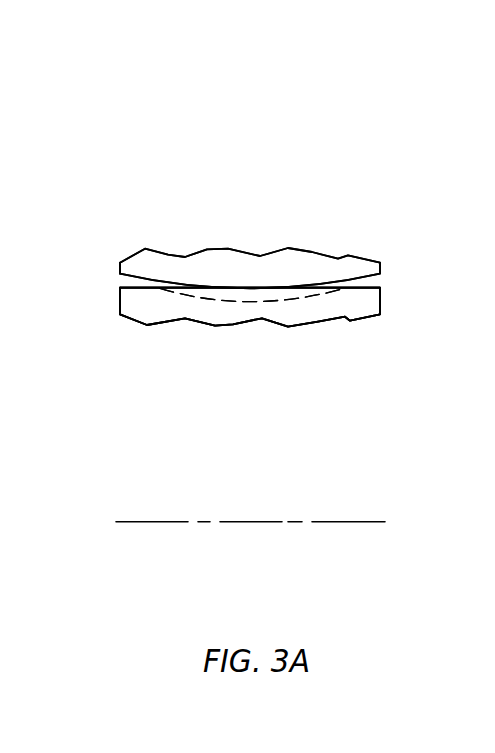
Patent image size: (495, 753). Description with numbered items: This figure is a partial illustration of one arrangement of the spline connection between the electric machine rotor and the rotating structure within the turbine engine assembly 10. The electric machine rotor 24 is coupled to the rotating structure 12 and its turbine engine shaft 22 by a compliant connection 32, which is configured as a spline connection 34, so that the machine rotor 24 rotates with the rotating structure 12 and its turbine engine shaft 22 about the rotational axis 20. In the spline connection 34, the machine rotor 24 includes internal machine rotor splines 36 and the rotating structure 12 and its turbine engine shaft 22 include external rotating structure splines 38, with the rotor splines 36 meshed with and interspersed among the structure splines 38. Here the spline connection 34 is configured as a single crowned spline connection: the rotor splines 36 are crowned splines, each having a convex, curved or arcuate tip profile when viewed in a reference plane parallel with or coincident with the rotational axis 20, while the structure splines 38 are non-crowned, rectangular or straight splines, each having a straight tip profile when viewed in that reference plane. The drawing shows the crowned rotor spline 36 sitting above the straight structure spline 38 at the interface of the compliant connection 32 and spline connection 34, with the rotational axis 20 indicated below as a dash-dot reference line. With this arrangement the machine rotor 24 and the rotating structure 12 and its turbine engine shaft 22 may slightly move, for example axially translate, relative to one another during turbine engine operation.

The turbine engine assembly 10 is at (344, 119).
The rotating structure 12 is at (250, 336).
The turbine engine shaft 22 is at (250, 307).
The electric machine rotor 24 is at (258, 240).
The compliant connection 32 is at (402, 284).
The spline connection 34 is at (252, 294).
The machine rotor splines 36 is at (120, 268).
The rotating structure splines 38 is at (120, 294).
The rotational axis 20 is at (368, 522).